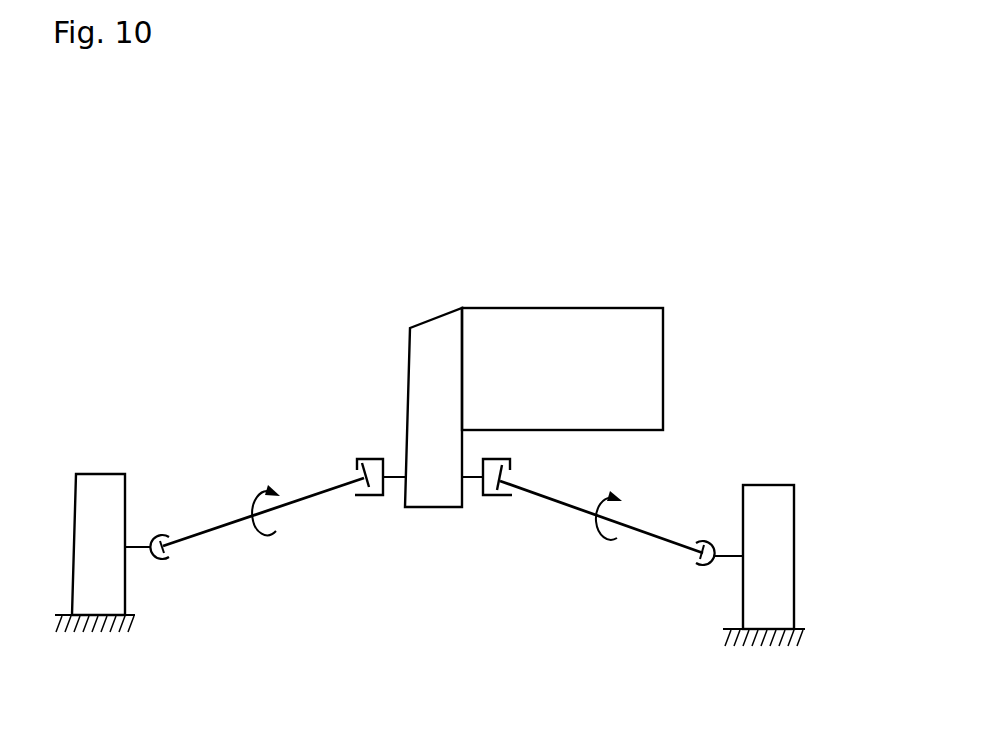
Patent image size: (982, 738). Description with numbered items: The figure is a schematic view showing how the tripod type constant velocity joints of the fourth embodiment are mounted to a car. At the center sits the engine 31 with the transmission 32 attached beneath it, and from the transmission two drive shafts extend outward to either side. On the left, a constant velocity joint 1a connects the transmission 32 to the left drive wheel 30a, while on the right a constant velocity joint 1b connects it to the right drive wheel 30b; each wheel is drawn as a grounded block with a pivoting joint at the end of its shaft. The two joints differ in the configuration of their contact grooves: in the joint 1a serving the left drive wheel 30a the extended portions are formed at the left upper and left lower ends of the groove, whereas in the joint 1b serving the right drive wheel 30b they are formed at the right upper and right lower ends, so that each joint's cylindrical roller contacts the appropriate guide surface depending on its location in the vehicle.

The engine 31 is at (588, 333).
The transmission 32 is at (434, 340).
The constant velocity joint 1a is at (362, 496).
The constant velocity joint 1b is at (503, 497).
The left drive wheel 30a is at (83, 510).
The right drive wheel 30b is at (780, 523).